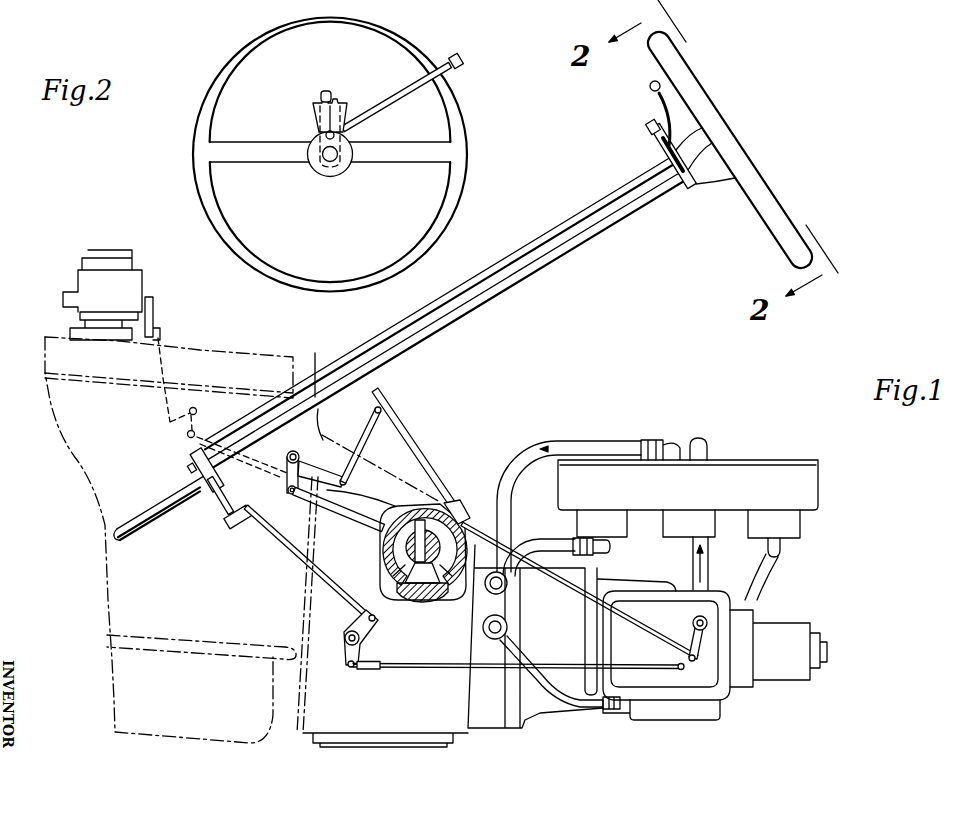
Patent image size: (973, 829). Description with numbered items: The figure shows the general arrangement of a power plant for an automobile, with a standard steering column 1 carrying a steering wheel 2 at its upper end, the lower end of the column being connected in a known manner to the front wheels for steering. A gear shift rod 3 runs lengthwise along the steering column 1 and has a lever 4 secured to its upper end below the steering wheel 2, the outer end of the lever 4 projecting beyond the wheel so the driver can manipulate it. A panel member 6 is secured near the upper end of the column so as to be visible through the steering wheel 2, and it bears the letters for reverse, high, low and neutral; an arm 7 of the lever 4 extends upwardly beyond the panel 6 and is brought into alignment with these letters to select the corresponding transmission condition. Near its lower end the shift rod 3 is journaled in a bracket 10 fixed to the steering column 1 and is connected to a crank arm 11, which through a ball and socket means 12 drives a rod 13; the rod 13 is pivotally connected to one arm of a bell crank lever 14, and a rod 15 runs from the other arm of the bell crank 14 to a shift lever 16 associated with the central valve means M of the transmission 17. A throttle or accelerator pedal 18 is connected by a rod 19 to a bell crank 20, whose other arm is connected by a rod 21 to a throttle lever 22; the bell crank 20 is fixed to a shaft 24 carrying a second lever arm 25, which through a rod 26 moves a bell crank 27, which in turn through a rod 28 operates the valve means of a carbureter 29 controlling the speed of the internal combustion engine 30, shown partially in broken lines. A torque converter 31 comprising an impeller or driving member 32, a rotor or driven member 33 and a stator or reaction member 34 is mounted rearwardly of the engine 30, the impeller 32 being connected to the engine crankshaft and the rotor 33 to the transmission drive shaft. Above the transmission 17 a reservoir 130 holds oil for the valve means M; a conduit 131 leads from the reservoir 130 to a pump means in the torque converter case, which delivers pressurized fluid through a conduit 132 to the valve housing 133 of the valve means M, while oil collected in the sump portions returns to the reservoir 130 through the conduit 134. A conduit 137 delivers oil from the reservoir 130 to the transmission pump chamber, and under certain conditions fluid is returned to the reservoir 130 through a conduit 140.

In FIG. 1, the steering column 1 is at (609, 229).
In FIG. 2, the steering wheel 2 is at (446, 198).
In FIG. 1, the steering wheel 2 is at (754, 181).
In FIG. 1, the gear shift rod 3 is at (586, 209).
In FIG. 2, the lever 4 is at (398, 96).
In FIG. 1, the lever 4 is at (658, 100).
In FIG. 2, the panel member 6 is at (340, 102).
In FIG. 1, the panel member 6 is at (666, 156).
In FIG. 2, the arm 7 is at (328, 92).
In FIG. 1, the arm 7 is at (649, 131).
In FIG. 1, the bracket 10 is at (195, 464).
In FIG. 1, the crank arm 11 is at (220, 506).
In FIG. 1, the ball and socket means 12 is at (243, 528).
In FIG. 1, the rod 13 is at (294, 552).
In FIG. 1, the bell crank lever 14 is at (364, 618).
In FIG. 1, the rod 15 is at (440, 669).
In FIG. 1, the shift lever 16 is at (694, 629).
In FIG. 1, the transmission 17 is at (617, 579).
In FIG. 1, the throttle or accelerator pedal 18 is at (414, 450).
In FIG. 1, the rod 19 is at (362, 444).
In FIG. 1, the bell crank 20 is at (313, 462).
In FIG. 1, the rod 21 is at (358, 521).
In FIG. 1, the throttle lever 22 is at (704, 638).
In FIG. 1, the shaft 24 is at (282, 476).
In FIG. 1, the second lever arm 25 is at (288, 492).
In FIG. 1, the rod 26 is at (197, 434).
In FIG. 1, the bell crank 27 is at (199, 411).
In FIG. 1, the rod 28 is at (167, 378).
In FIG. 1, the carbureter 29 is at (128, 273).
In FIG. 1, the internal combustion engine 30 is at (75, 460).
In FIG. 1, the torque converter 31 is at (463, 508).
In FIG. 1, the impeller or driving member 32 is at (468, 515).
In FIG. 1, the rotor or driven member 33 is at (380, 553).
In FIG. 1, the stator or reaction member 34 is at (412, 600).
In FIG. 1, the central valve means M is at (704, 676).
In FIG. 1, the reservoir 130 is at (738, 472).
In FIG. 1, the conduit 131 is at (528, 545).
In FIG. 1, the conduit 132 is at (545, 700).
In FIG. 1, the valve housing 133 is at (709, 710).
In FIG. 1, the conduit 134 is at (512, 490).
In FIG. 1, the conduit 137 is at (767, 567).
In FIG. 1, the conduit 140 is at (709, 562).